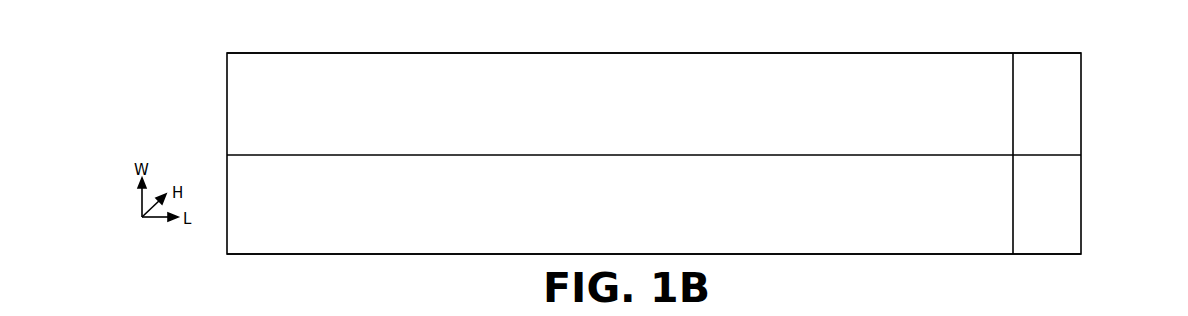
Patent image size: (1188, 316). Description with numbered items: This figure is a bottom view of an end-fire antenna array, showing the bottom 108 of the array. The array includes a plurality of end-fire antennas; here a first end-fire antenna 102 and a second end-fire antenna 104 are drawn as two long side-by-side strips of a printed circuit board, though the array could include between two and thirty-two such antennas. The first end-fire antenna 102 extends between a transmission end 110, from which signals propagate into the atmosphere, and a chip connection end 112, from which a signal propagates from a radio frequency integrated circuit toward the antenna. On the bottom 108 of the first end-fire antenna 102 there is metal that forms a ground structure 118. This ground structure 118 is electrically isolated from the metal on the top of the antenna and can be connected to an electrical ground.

The first end-fire antenna 102 is at (1081, 195).
The second end-fire antenna 104 is at (1081, 82).
The bottom 108 is at (413, 67).
The transmission end 110 is at (227, 104).
The chip connection end 112 is at (1081, 118).
The ground structure 118 is at (1071, 230).